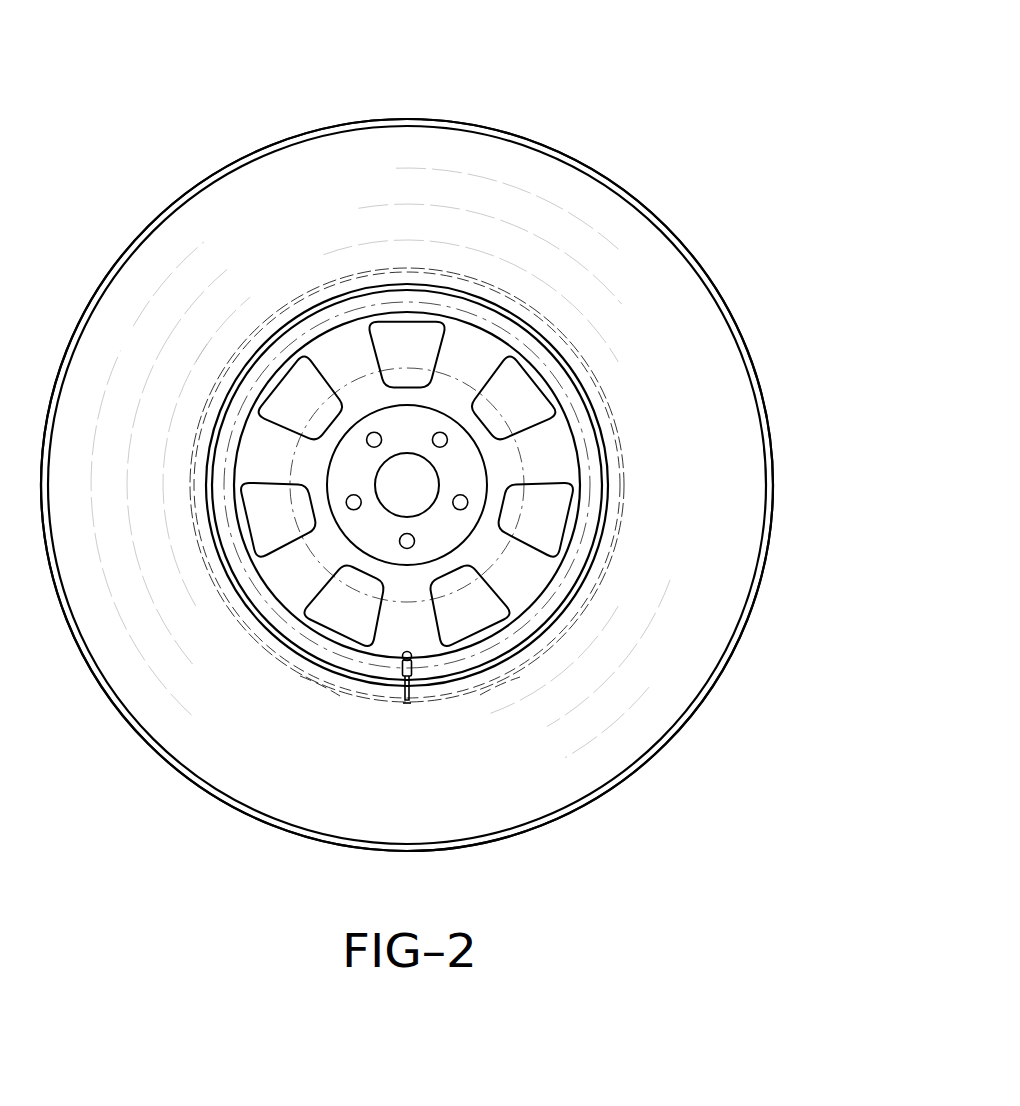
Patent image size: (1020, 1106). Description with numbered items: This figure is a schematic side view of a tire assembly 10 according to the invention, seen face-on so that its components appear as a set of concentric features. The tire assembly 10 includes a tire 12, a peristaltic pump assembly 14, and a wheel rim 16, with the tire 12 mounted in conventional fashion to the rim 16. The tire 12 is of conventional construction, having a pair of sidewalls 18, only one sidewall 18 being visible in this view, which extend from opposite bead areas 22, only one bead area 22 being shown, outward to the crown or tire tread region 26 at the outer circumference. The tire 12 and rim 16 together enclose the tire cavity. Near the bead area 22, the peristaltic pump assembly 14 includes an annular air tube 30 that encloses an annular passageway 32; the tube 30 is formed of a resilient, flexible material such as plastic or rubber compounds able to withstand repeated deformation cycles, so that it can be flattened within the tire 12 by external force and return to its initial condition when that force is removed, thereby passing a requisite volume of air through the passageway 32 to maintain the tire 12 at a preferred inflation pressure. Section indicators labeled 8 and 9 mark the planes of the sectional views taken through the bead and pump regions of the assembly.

The tire assembly 10 is at (643, 96).
The tire 12 is at (696, 324).
The peristaltic pump assembly 14 is at (434, 718).
The wheel rim 16 is at (309, 585).
The sidewall 18 is at (237, 208).
The bead area 22 is at (367, 272).
The crown or tire tread region 26 is at (118, 262).
The annular air tube 30 is at (502, 683).
The annular passageway 32 is at (316, 692).
The section line 8- 8 is at (283, 505).
The section line 9- 9 is at (407, 650).